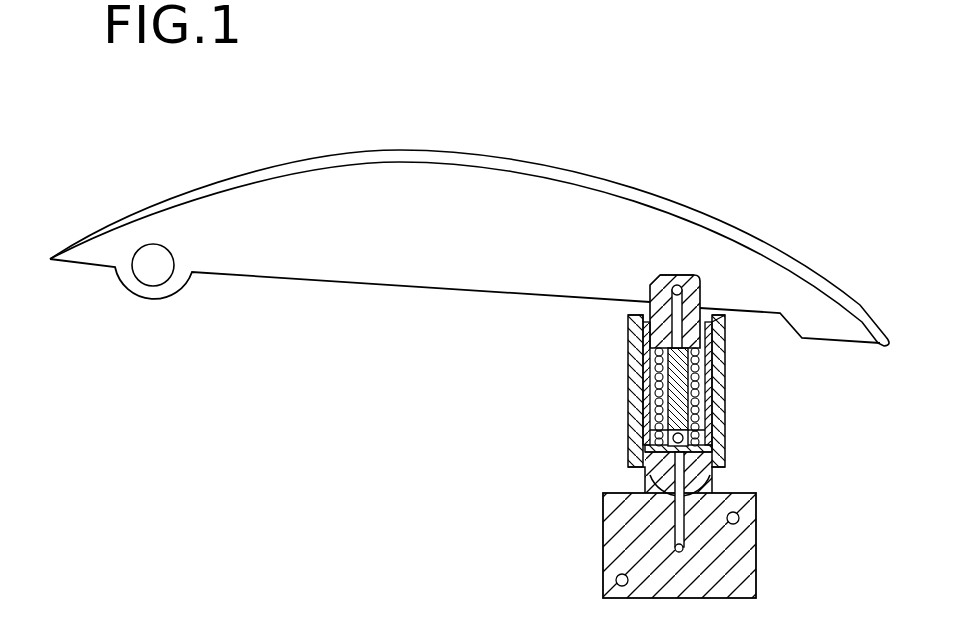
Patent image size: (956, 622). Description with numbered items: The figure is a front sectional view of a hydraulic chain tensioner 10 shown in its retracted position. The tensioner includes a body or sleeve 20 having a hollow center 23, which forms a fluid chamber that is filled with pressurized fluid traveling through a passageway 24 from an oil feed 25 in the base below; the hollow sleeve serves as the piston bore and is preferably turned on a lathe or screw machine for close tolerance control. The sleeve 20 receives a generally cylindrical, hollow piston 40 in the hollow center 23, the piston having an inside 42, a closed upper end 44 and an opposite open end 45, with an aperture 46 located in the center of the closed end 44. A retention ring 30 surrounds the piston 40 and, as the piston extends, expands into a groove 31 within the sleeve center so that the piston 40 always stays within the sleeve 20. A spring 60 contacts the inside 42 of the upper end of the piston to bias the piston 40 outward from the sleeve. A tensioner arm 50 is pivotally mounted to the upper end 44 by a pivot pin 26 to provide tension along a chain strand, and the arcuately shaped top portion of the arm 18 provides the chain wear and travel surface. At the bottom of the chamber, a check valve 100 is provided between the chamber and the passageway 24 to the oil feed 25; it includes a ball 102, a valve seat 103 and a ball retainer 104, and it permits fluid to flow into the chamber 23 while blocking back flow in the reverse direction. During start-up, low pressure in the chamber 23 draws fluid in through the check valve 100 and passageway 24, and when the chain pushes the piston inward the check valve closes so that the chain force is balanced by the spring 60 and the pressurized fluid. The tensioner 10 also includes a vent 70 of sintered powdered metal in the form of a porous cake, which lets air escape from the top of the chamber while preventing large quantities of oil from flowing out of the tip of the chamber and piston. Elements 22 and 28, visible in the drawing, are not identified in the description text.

The hydraulic chain tensioner 10 is at (630, 383).
The top portion of the arm 18 is at (388, 148).
The sleeve 20 is at (725, 368).
The end plate 22 is at (650, 438).
The hollow center 23 is at (700, 402).
The passageway 24 is at (708, 470).
The oil feed 25 is at (684, 548).
The pivot pin 26 is at (684, 276).
The rod 28 is at (704, 516).
The retention ring 30 is at (708, 396).
The groove 31 is at (715, 325).
The piston 40 is at (648, 336).
The inside of the piston 42 is at (647, 362).
The closed end of the piston 44 is at (678, 277).
The open end of the piston 45 is at (698, 433).
The aperture 46 is at (695, 296).
The tensioner arm 50 is at (468, 252).
The spring 60 is at (648, 402).
The vent 70 is at (704, 308).
The check valve 100 is at (700, 436).
The ball 102 is at (662, 448).
The valve seat 103 is at (655, 495).
The ball retainer 104 is at (645, 428).